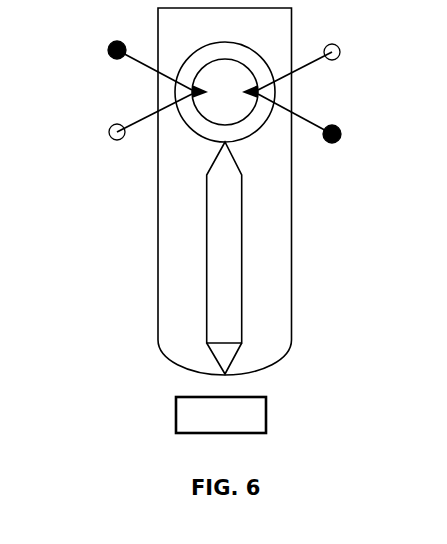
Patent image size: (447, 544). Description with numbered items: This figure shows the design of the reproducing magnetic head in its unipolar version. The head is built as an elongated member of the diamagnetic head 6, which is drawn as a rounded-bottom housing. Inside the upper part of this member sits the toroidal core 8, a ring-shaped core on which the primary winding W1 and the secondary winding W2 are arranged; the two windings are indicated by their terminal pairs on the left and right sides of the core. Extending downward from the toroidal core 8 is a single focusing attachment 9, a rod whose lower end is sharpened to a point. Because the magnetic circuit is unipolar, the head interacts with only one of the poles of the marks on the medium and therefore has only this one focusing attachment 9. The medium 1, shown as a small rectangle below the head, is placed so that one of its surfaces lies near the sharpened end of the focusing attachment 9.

The medium 1 is at (190, 407).
The member of the diamagnetic head 6 is at (173, 227).
The toroidal core 8 is at (190, 126).
The focusing attachment 9 is at (225, 308).
The primary winding W1 is at (134, 90).
The secondary winding W2 is at (310, 93).